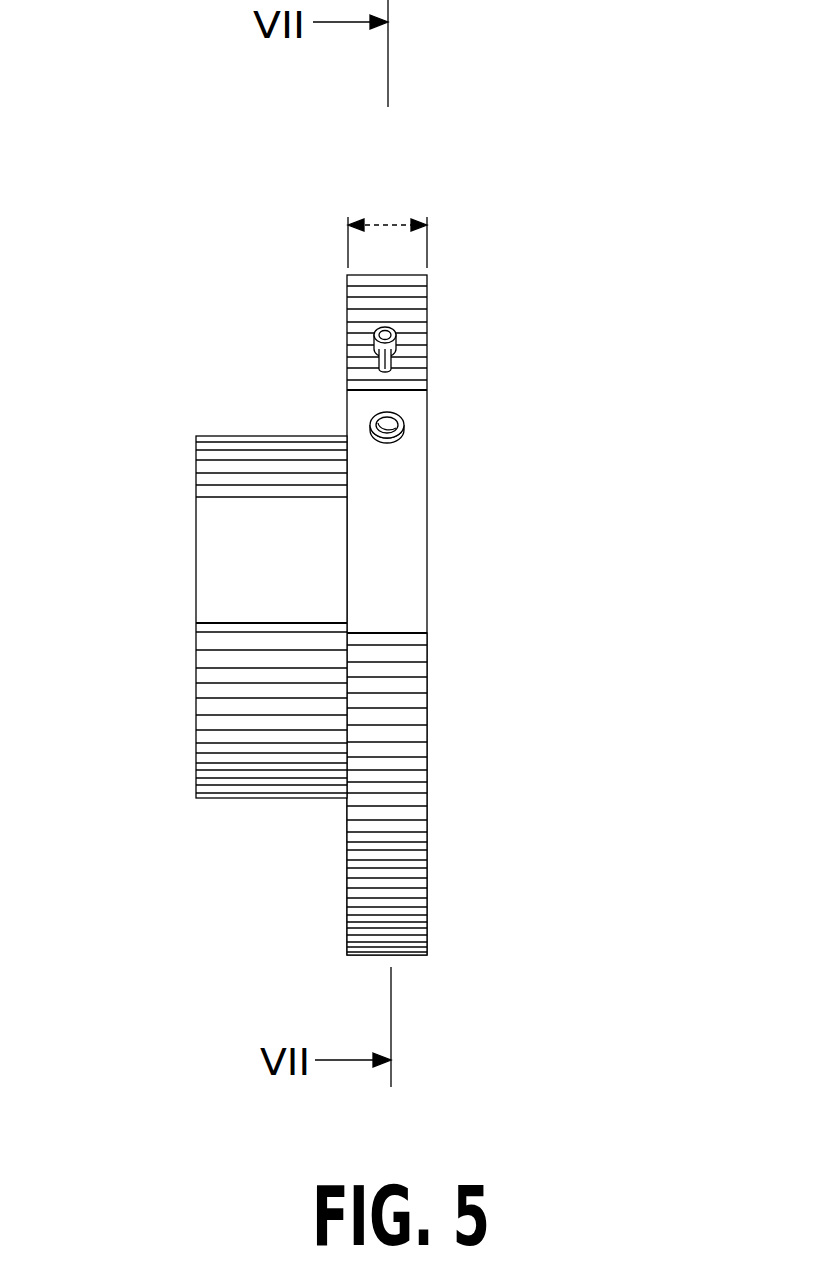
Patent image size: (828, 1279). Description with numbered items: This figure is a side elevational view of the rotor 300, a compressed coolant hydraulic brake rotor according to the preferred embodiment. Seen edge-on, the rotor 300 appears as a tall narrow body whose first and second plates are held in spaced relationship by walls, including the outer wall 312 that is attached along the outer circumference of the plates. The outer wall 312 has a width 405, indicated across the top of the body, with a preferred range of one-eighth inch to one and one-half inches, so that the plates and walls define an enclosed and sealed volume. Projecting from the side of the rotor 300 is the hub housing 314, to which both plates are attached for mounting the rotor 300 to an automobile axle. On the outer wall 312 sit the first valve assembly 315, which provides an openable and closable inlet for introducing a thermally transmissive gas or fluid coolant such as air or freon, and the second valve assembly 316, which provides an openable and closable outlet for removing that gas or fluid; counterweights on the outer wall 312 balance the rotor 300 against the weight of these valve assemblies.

The rotor 300 is at (371, 545).
The outer wall 312 is at (393, 688).
The hub housing 314 is at (228, 515).
The first valve assembly 315 is at (413, 345).
The second valve assembly 316 is at (405, 432).
The width 405 is at (380, 222).